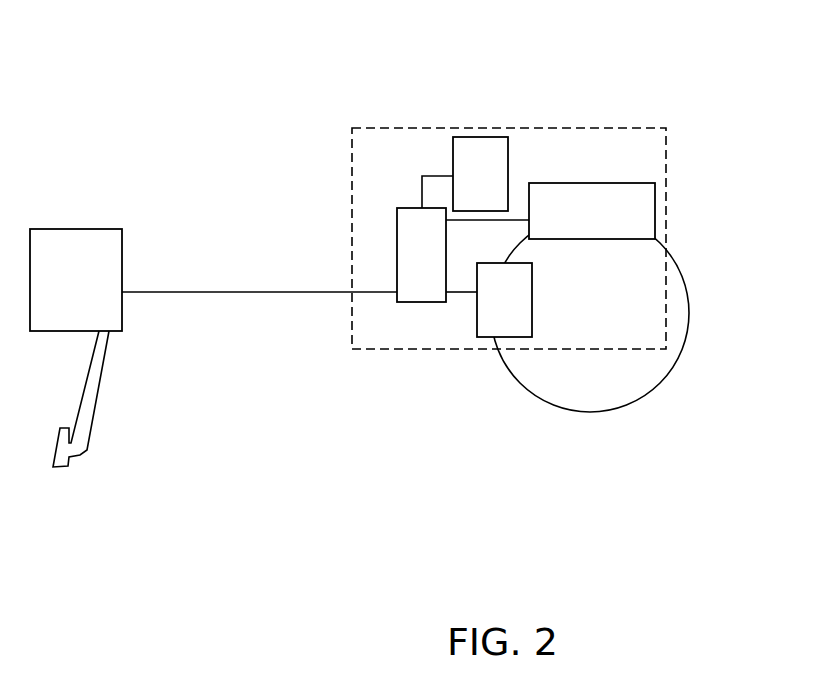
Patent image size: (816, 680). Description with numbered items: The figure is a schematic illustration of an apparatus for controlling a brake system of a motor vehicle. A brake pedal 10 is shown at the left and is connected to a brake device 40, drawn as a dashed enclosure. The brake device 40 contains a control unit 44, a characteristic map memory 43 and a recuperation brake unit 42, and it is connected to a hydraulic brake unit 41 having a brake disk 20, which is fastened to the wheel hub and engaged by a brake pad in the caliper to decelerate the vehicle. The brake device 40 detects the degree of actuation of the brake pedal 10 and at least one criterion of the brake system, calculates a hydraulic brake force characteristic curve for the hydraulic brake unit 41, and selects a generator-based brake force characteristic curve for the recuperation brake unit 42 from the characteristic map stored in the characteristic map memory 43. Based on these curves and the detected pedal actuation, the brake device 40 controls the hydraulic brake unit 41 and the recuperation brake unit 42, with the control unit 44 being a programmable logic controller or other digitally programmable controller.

The brake pedal 10 is at (108, 228).
The brake disk 20 is at (688, 335).
The brake device 40 is at (412, 349).
The hydraulic brake unit 41 is at (486, 337).
The recuperation brake unit 42 is at (655, 200).
The characteristic map memory 43 is at (478, 137).
The control unit 44 is at (397, 226).